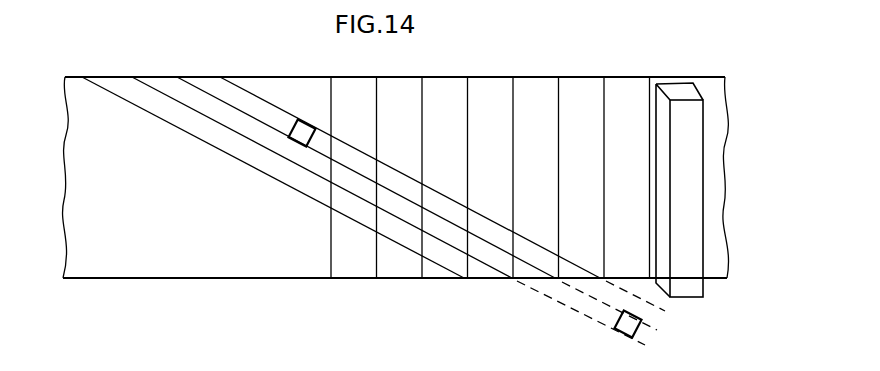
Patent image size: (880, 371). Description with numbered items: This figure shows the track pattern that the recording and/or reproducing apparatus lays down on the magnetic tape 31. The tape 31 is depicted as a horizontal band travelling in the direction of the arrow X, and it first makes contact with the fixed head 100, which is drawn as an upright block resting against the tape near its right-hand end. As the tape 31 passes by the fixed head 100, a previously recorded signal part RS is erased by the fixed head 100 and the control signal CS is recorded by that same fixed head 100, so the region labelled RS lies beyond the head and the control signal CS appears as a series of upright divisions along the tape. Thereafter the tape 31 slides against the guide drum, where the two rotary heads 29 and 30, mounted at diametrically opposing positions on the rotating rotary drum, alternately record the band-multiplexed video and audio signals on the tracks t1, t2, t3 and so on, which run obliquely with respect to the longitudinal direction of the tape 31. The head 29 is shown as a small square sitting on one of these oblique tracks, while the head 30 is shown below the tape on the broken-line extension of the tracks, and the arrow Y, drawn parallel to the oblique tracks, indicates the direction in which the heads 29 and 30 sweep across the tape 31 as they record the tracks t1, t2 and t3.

The rotary head 29 is at (300, 123).
The rotary head 30 is at (625, 334).
The magnetic tape 31 is at (470, 77).
The fixed head 100 is at (684, 296).
The control signal CS is at (558, 97).
The recorded signal part RS is at (710, 97).
The track t1 is at (246, 100).
The track t2 is at (258, 137).
The track t3 is at (213, 137).
The arrow indicating tape travelling direction X is at (204, 58).
The head scanning direction Y is at (373, 147).